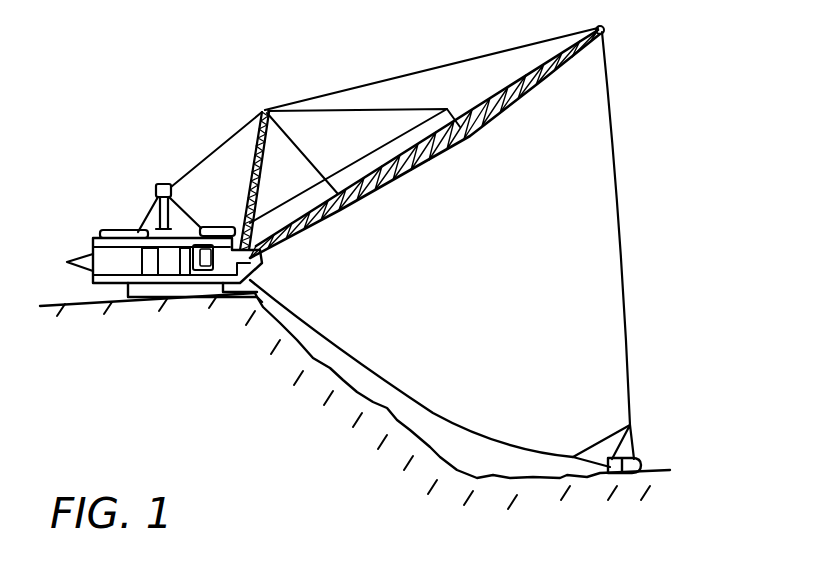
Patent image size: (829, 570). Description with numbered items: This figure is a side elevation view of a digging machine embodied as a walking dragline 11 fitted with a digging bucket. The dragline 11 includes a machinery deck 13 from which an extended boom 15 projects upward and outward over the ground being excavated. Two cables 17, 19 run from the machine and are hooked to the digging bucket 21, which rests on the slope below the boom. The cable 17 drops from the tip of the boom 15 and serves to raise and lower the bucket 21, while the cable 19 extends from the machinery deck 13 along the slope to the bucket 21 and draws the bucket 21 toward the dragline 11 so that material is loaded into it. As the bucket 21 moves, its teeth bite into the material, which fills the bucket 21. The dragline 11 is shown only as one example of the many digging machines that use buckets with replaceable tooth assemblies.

The walking dragline 11 is at (120, 230).
The machinery deck 13 is at (127, 267).
The extended boom 15 is at (413, 172).
The cable 17 is at (618, 197).
The cable 19 is at (363, 362).
The digging bucket 21 is at (624, 473).